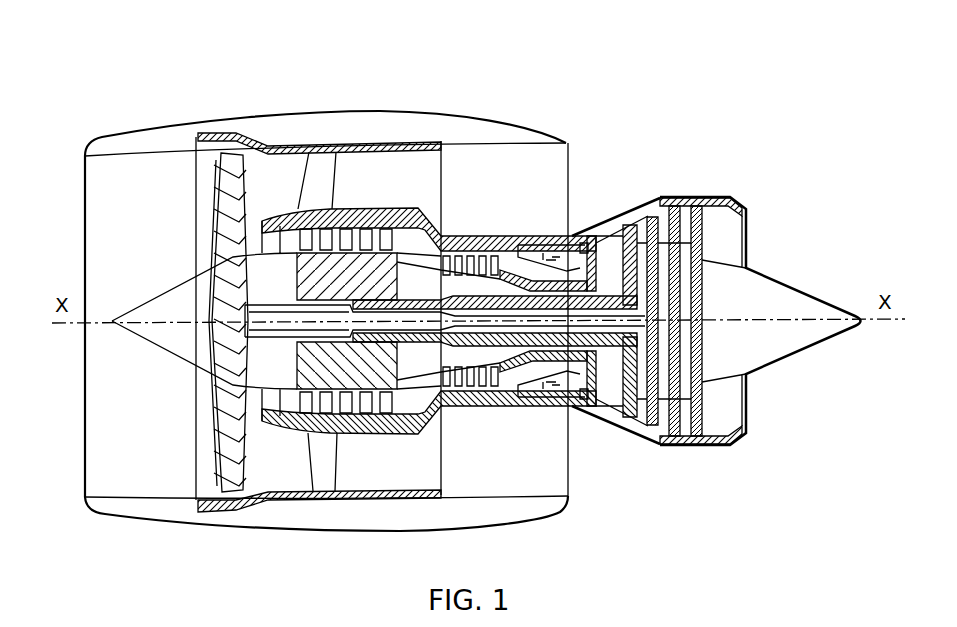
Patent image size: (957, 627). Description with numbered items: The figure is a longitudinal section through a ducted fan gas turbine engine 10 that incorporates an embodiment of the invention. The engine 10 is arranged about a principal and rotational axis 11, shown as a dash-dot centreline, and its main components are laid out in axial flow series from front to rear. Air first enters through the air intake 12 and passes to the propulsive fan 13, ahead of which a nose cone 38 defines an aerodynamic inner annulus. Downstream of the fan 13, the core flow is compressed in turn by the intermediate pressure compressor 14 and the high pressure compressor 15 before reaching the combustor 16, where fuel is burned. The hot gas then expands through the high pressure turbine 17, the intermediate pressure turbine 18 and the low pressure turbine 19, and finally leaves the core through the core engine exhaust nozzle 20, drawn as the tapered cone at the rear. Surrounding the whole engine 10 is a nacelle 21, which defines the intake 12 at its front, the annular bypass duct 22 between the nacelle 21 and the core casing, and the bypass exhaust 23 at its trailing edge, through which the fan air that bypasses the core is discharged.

The ducted fan gas turbine engine 10 is at (134, 58).
The principal and rotational axis 11 is at (106, 322).
The air intake 12 is at (135, 145).
The propulsive fan 13 is at (220, 452).
The intermediate pressure compressor 14 is at (365, 408).
The high pressure compressor 15 is at (483, 258).
The combustor 16 is at (535, 388).
The high pressure turbine 17 is at (593, 405).
The intermediate pressure turbine 18 is at (628, 240).
The low pressure turbine 19 is at (677, 205).
The core engine exhaust nozzle 20 is at (738, 198).
The nacelle 21 is at (306, 125).
The bypass duct 22 is at (392, 191).
The bypass exhaust 23 is at (567, 142).
The nose cone 38 is at (147, 343).